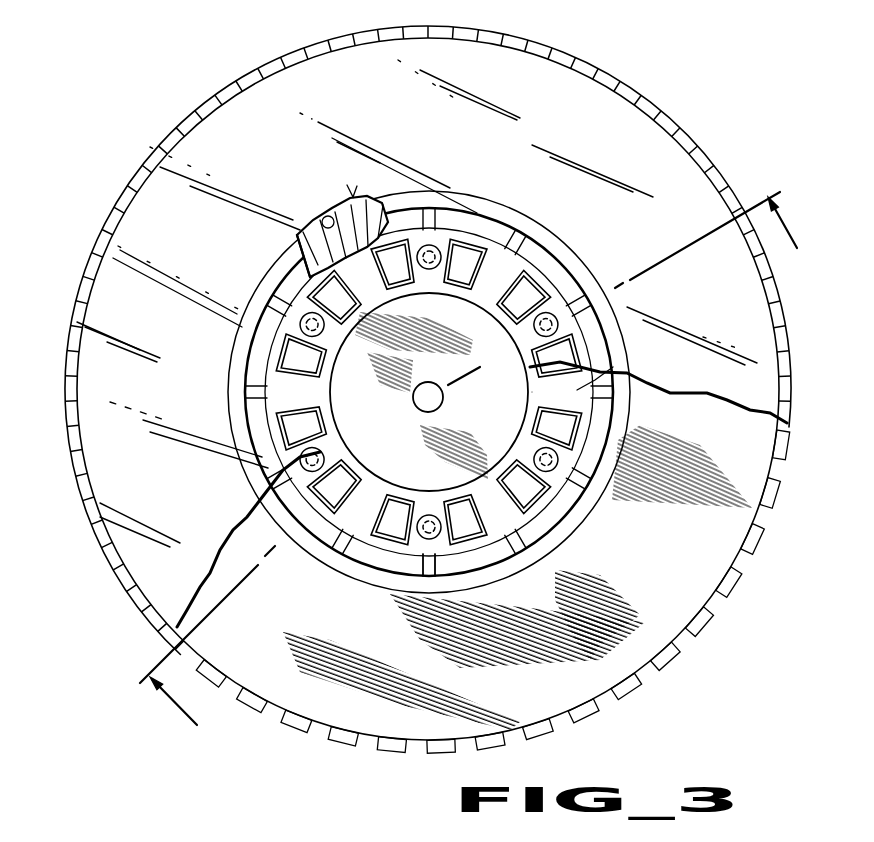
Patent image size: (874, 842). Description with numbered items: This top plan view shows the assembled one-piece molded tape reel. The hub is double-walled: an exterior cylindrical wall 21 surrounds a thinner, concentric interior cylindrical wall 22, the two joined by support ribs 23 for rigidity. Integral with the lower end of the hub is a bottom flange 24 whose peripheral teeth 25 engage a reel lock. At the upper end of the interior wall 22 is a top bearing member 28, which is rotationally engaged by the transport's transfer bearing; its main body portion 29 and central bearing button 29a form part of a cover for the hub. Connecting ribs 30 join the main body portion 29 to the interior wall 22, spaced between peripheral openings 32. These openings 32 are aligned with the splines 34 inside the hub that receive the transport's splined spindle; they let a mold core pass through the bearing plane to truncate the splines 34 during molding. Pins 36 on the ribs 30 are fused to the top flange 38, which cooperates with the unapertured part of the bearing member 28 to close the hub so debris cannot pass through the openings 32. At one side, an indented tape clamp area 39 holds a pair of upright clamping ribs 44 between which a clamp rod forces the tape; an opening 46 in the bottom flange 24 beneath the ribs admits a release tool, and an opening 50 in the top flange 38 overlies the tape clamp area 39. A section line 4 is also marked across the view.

The exterior cylindrical wall 21 is at (620, 412).
The interior cylindrical wall 22 is at (613, 367).
The support ribs 23 is at (587, 472).
The bottom flange 24 is at (747, 520).
The peripheral teeth 25 is at (733, 587).
The top bearing member 28 is at (500, 267).
The main body portion 29 is at (388, 463).
The central bearing button 29a is at (437, 400).
The connecting ribs 30 is at (275, 546).
The peripheral openings 32 is at (475, 520).
The splines 34 is at (463, 523).
The pins 36 is at (412, 413).
The top flange 38 is at (747, 387).
The tape clamp area 39 is at (305, 205).
The clamping ribs 44 is at (353, 197).
The opening 46 is at (327, 216).
The opening 50 is at (296, 233).
The section line 4- 4 is at (467, 454).